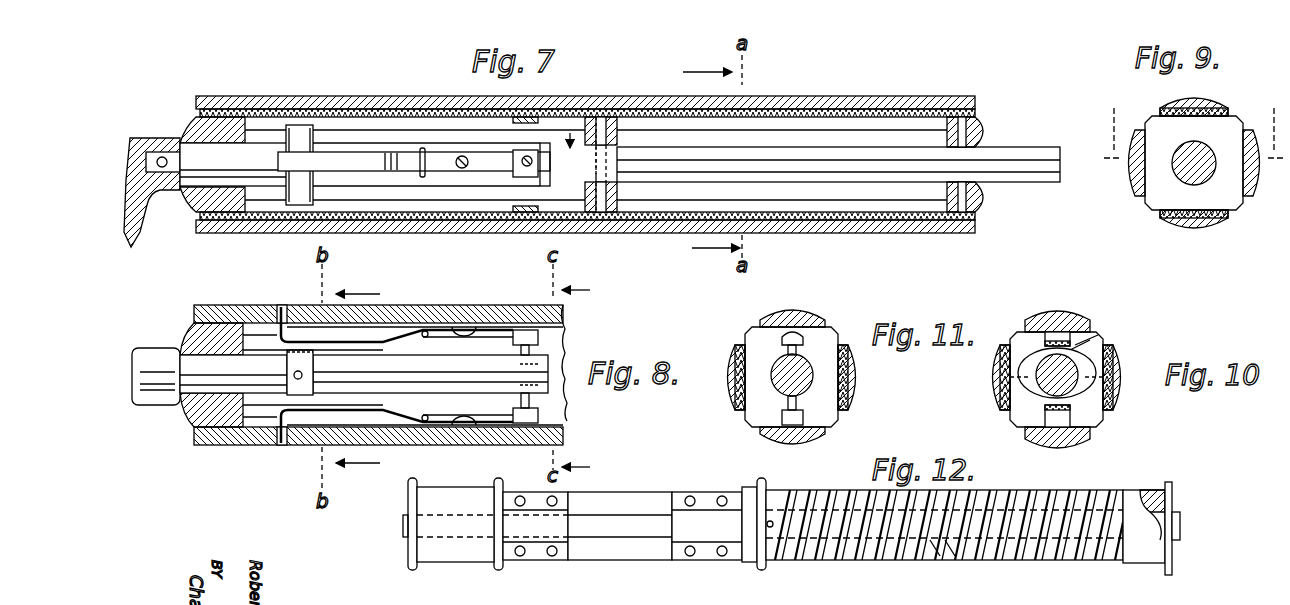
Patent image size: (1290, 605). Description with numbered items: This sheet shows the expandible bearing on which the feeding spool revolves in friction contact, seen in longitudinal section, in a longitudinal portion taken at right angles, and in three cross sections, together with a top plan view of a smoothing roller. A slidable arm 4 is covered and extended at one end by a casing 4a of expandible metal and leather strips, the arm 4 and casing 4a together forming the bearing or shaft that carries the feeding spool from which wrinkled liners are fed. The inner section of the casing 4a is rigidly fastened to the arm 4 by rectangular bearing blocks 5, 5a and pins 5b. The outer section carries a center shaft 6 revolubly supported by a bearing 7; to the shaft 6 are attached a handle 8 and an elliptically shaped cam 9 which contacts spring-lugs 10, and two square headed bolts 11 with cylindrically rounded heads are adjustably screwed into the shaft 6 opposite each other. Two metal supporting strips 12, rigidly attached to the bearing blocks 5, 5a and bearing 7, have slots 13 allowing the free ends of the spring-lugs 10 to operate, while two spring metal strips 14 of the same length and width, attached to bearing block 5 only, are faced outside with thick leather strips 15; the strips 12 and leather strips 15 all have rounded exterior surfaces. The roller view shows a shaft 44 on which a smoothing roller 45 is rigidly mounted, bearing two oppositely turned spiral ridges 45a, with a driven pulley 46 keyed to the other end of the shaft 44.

In FIG. 7, the slidable arm 4 is at (1028, 147).
In FIG. 9, the slidable arm 4 is at (1189, 184).
In FIG. 7, the casing 4a is at (480, 118).
In FIG. 7, the rectangular bearing block 5 is at (983, 196).
In FIG. 9, the rectangular bearing block 5 is at (1230, 122).
In FIG. 7, the rectangular bearing block 5a is at (612, 220).
In FIG. 11, the rectangular bearing block 5a is at (830, 332).
In FIG. 10, the rectangular bearing block 5a is at (1092, 330).
In FIG. 7, the pins 5b is at (602, 140).
In FIG. 7, the center shaft 6 is at (176, 146).
In FIG. 8, the center shaft 6 is at (265, 376).
In FIG. 11, the center shaft 6 is at (780, 380).
In FIG. 7, the bearing 7 is at (193, 122).
In FIG. 8, the bearing 7 is at (185, 345).
In FIG. 7, the handle 8 is at (144, 232).
In FIG. 7, the elliptically shaped cam 9 is at (306, 126).
In FIG. 8, the elliptically shaped cam 9 is at (417, 372).
In FIG. 10, the elliptically shaped cam 9 is at (1082, 398).
In FIG. 7, the spring-lugs 10 is at (414, 164).
In FIG. 8, the spring-lugs 10 is at (290, 332).
In FIG. 7, the square headed bolts 11 is at (522, 178).
In FIG. 8, the square headed bolts 11 is at (540, 336).
In FIG. 11, the square headed bolts 11 is at (785, 343).
In FIG. 8, the metal supporting strips 12 is at (226, 307).
In FIG. 9, the metal supporting strips 12 is at (1128, 188).
In FIG. 11, the metal supporting strips 12 is at (795, 318).
In FIG. 10, the metal supporting strips 12 is at (1065, 312).
In FIG. 8, the slots 13 is at (281, 310).
In FIG. 7, the spring metal strips 14 is at (836, 108).
In FIG. 9, the spring metal strips 14 is at (1158, 114).
In FIG. 11, the spring metal strips 14 is at (743, 410).
In FIG. 10, the spring metal strips 14 is at (1105, 350).
In FIG. 7, the leather strips 15 is at (895, 86).
In FIG. 9, the leather strips 15 is at (1176, 104).
In FIG. 11, the leather strips 15 is at (728, 352).
In FIG. 10, the leather strips 15 is at (988, 372).
In FIG. 12, the shafts 44 is at (628, 527).
In FIG. 12, the smoothing roller 45 is at (985, 566).
In FIG. 12, the spiral ridges 45a is at (874, 566).
In FIG. 12, the driven pulleys 46 is at (476, 564).